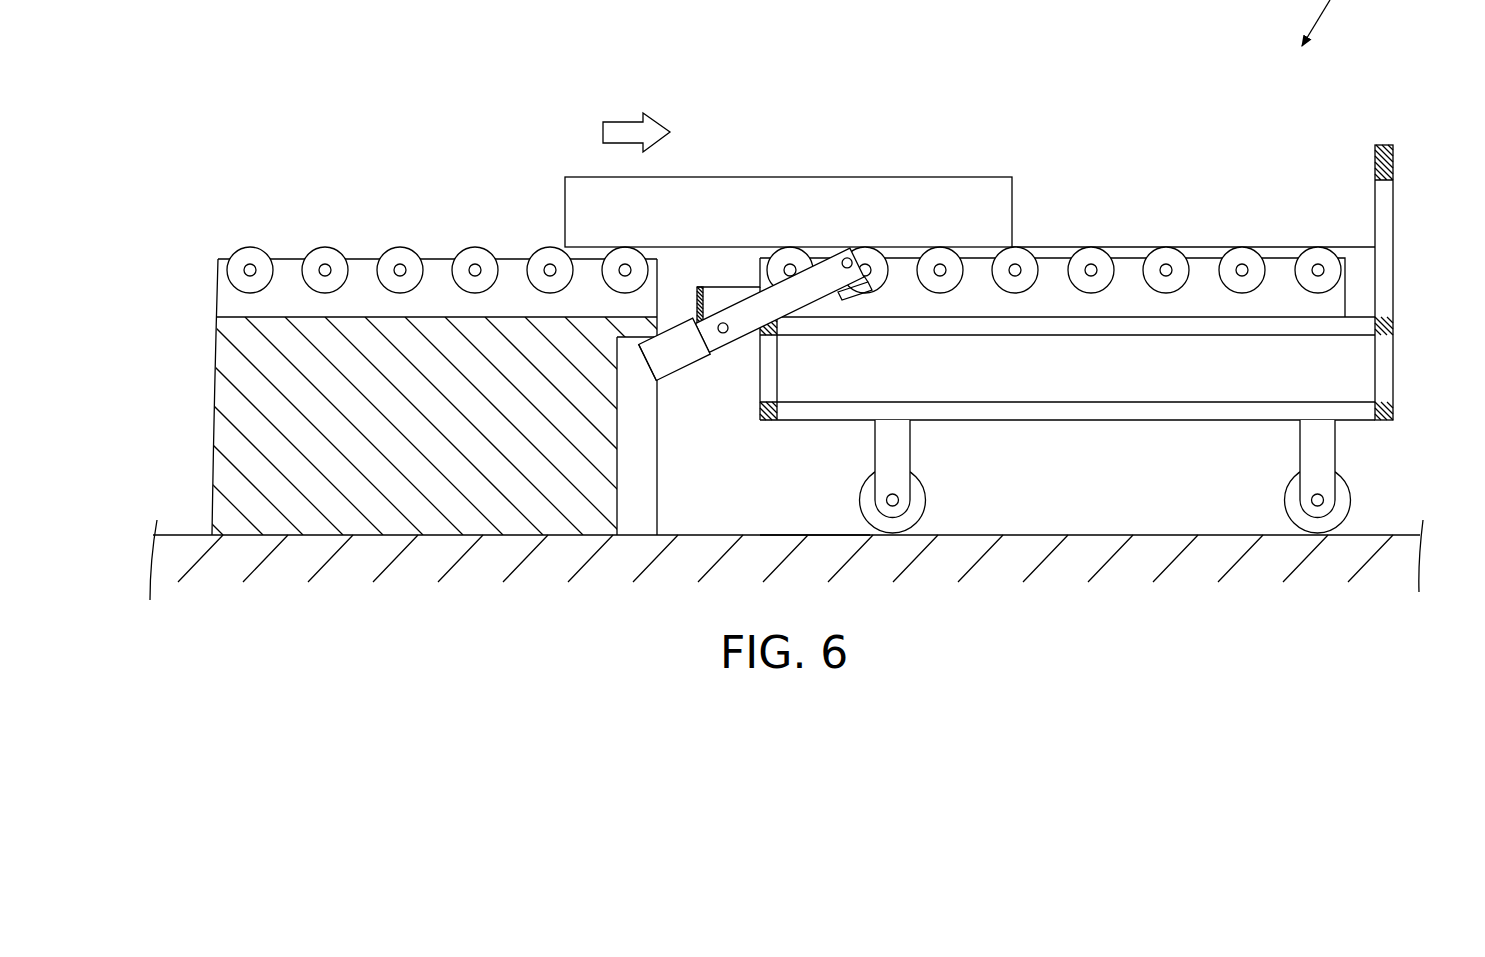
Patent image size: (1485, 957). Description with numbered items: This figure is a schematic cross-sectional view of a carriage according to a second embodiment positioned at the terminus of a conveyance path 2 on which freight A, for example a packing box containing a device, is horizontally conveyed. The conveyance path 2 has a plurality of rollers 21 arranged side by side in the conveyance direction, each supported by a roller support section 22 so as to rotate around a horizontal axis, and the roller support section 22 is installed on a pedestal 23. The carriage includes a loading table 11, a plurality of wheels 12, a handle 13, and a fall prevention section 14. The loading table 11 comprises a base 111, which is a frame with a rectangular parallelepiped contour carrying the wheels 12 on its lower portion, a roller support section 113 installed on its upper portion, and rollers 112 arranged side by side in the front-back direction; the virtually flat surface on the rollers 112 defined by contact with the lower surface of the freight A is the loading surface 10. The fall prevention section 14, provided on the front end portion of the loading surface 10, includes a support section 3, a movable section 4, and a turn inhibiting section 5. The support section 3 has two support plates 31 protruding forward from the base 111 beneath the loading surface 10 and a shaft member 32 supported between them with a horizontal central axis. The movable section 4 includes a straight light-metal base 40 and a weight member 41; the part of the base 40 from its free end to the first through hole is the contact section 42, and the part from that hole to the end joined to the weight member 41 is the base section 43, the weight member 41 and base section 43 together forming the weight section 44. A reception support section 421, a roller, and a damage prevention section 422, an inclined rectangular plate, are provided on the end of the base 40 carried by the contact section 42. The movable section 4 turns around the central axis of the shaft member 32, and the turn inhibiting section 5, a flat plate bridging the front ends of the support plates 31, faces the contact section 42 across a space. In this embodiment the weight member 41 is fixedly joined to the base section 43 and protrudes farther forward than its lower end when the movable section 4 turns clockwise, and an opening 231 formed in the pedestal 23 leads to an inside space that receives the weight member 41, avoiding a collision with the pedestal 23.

The conveyance path 2 is at (431, 326).
The rollers 21 is at (552, 257).
The roller support section 22 is at (225, 303).
The pedestal 23 is at (225, 390).
The opening 231 is at (640, 510).
The support section 3 is at (760, 341).
The movable section 4 is at (798, 364).
The base 40 is at (798, 364).
The weight member 41 is at (700, 362).
The contact section 42 is at (770, 258).
The base section 43 is at (768, 412).
The weight section 44 is at (680, 385).
The reception support section 421 is at (886, 281).
The damage prevention section 422 is at (860, 299).
The turn inhibiting section 5 is at (698, 300).
The support plates 31 is at (735, 287).
The shaft member 32 is at (700, 238).
The loading surface 10 is at (1075, 295).
The loading table 11 is at (1066, 383).
The base 111 is at (1145, 416).
The rollers 112 is at (1318, 253).
The roller support section 113 is at (903, 247).
The wheels 12 is at (1293, 496).
The handle 13 is at (1378, 192).
The fall prevention section 14 is at (782, 470).
The freight A is at (968, 193).